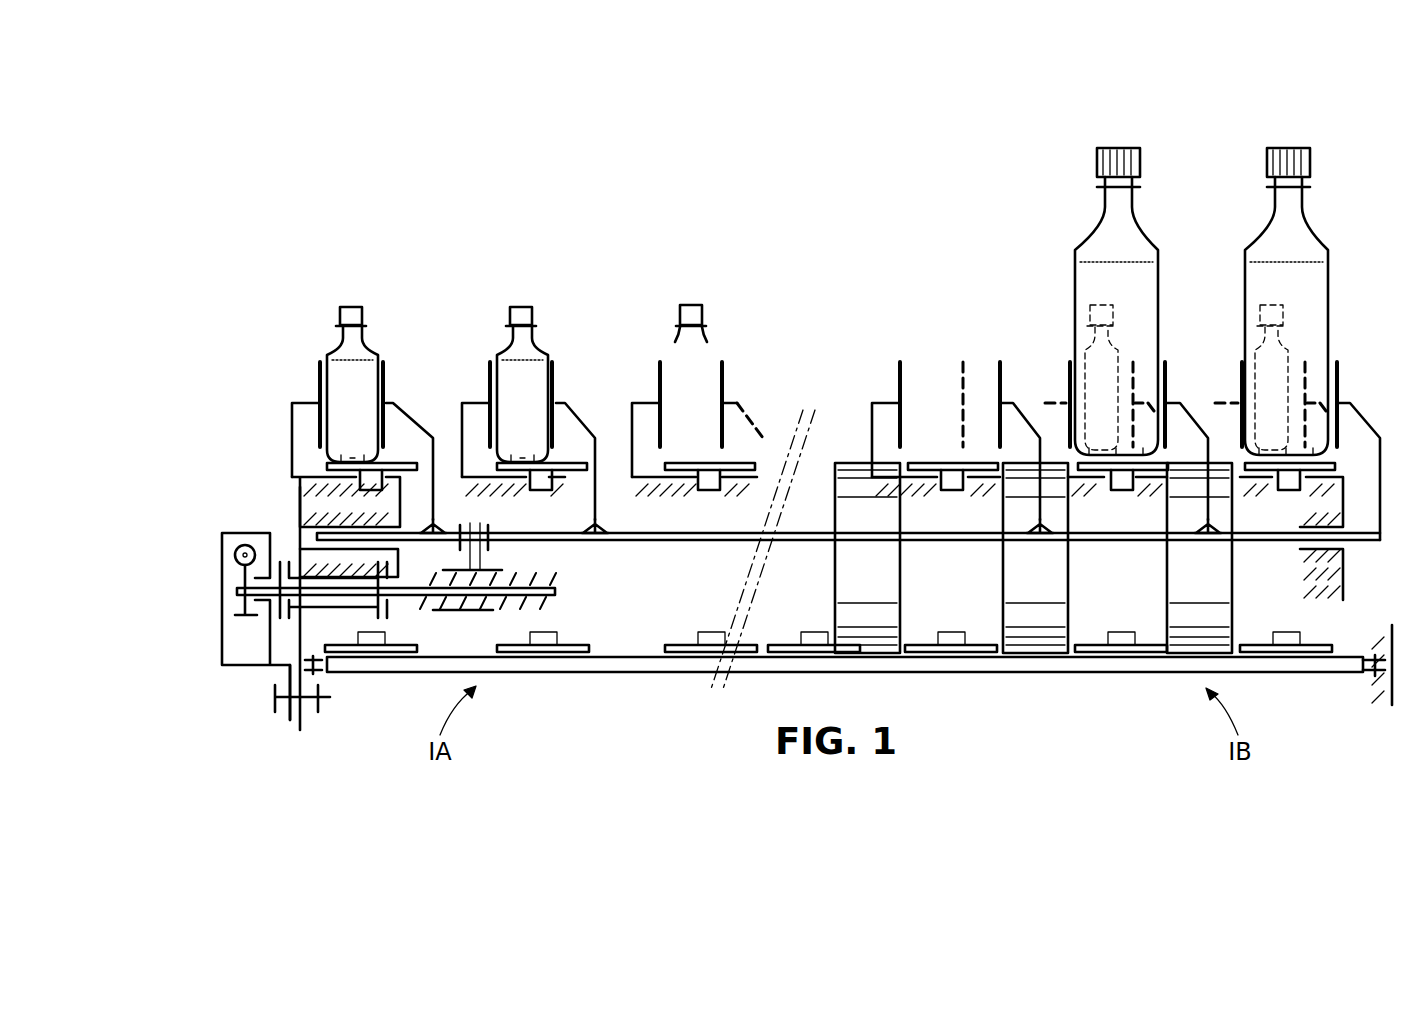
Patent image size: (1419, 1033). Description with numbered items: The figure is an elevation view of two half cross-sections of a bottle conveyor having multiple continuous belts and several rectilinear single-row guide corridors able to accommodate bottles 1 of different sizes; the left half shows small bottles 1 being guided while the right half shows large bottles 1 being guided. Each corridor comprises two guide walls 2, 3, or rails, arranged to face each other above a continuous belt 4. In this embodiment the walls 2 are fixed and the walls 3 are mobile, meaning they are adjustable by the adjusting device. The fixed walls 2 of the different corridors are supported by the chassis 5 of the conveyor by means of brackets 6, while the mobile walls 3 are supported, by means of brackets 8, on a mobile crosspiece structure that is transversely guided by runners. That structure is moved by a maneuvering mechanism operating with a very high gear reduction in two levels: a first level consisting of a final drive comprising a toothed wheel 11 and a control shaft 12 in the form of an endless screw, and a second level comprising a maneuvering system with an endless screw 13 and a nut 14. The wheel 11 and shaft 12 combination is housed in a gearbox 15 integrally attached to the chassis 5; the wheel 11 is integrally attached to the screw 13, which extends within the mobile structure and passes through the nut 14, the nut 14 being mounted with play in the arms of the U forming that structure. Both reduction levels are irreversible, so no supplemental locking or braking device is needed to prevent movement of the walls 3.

The bottles 1 is at (357, 348).
The fixed guide wall 2 is at (318, 378).
The mobile guide wall 3 is at (385, 377).
The continuous belt 4 is at (570, 468).
The chassis 5 is at (300, 491).
The bracket 6 is at (292, 421).
The bracket 8 is at (412, 420).
The toothed wheel 11 is at (243, 605).
The control shaft 12 is at (240, 552).
The endless screw 13 is at (555, 590).
The nut 14 is at (445, 612).
The gearbox 15 is at (217, 590).